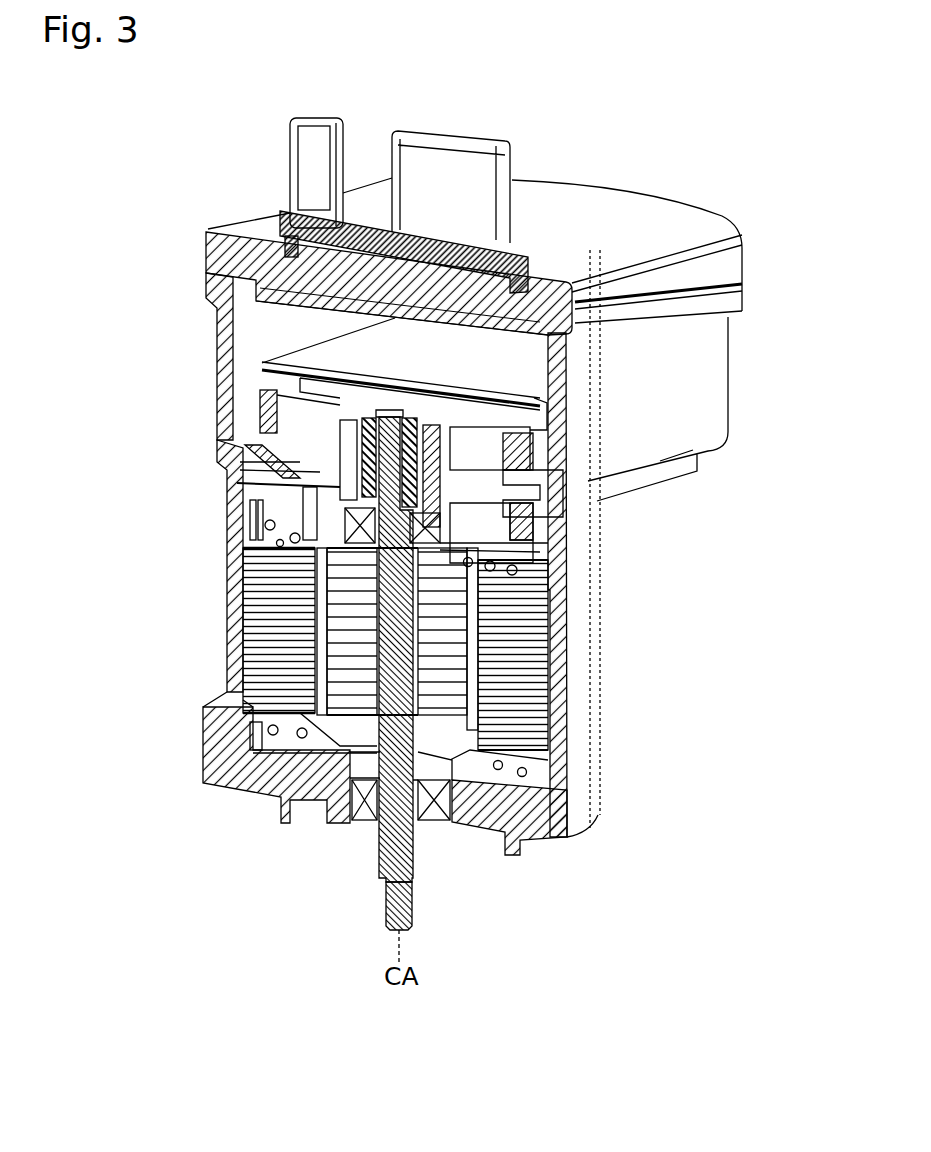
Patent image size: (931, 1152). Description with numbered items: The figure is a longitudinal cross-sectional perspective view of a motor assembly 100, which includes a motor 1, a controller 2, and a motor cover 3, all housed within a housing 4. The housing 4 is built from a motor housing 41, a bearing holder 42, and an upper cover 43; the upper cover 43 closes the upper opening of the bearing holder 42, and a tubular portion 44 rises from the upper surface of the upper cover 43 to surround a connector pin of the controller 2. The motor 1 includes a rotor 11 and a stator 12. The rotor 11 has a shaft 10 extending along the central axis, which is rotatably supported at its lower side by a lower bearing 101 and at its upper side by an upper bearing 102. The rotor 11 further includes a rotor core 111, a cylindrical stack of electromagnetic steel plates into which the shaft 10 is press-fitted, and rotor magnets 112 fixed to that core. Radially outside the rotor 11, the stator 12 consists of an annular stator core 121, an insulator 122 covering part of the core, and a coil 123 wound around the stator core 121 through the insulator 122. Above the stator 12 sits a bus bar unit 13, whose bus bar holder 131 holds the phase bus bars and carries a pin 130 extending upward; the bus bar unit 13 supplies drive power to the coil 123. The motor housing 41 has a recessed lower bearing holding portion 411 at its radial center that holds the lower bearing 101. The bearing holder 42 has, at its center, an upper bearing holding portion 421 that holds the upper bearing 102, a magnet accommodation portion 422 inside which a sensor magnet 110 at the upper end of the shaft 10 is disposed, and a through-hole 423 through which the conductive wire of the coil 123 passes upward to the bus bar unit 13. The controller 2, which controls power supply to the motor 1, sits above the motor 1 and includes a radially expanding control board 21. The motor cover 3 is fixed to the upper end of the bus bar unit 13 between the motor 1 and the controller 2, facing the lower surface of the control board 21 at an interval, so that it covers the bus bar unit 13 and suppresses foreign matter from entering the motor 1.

The motor assembly 100 is at (215, 167).
The motor 1 is at (443, 750).
The controller 2 is at (290, 323).
The motor cover 3 is at (340, 420).
The housing 4 is at (796, 245).
The shaft 10 is at (553, 729).
The rotor 11 is at (672, 655).
The stator 12 is at (152, 510).
The bus bar unit 13 is at (250, 420).
The control board 21 is at (262, 363).
The motor housing 41 is at (588, 543).
The bearing holder 42 is at (720, 398).
The upper cover 43 is at (733, 266).
The tubular portion 44 is at (318, 118).
The lower bearing 101 is at (374, 822).
The upper bearing 102 is at (245, 505).
The sensor magnet 110 is at (340, 372).
The rotor core 111 is at (553, 655).
The rotor magnet 112 is at (553, 692).
The stator core 121 is at (247, 575).
The insulator 122 is at (247, 533).
The coil 123 is at (240, 520).
The pin 130 is at (262, 380).
The bus bar holder 131 is at (329, 431).
The lower bearing holding portion 411 is at (445, 842).
The upper bearing holding portion 421 is at (550, 574).
The magnet accommodation portion 422 is at (240, 477).
The through-hole 423 is at (250, 440).